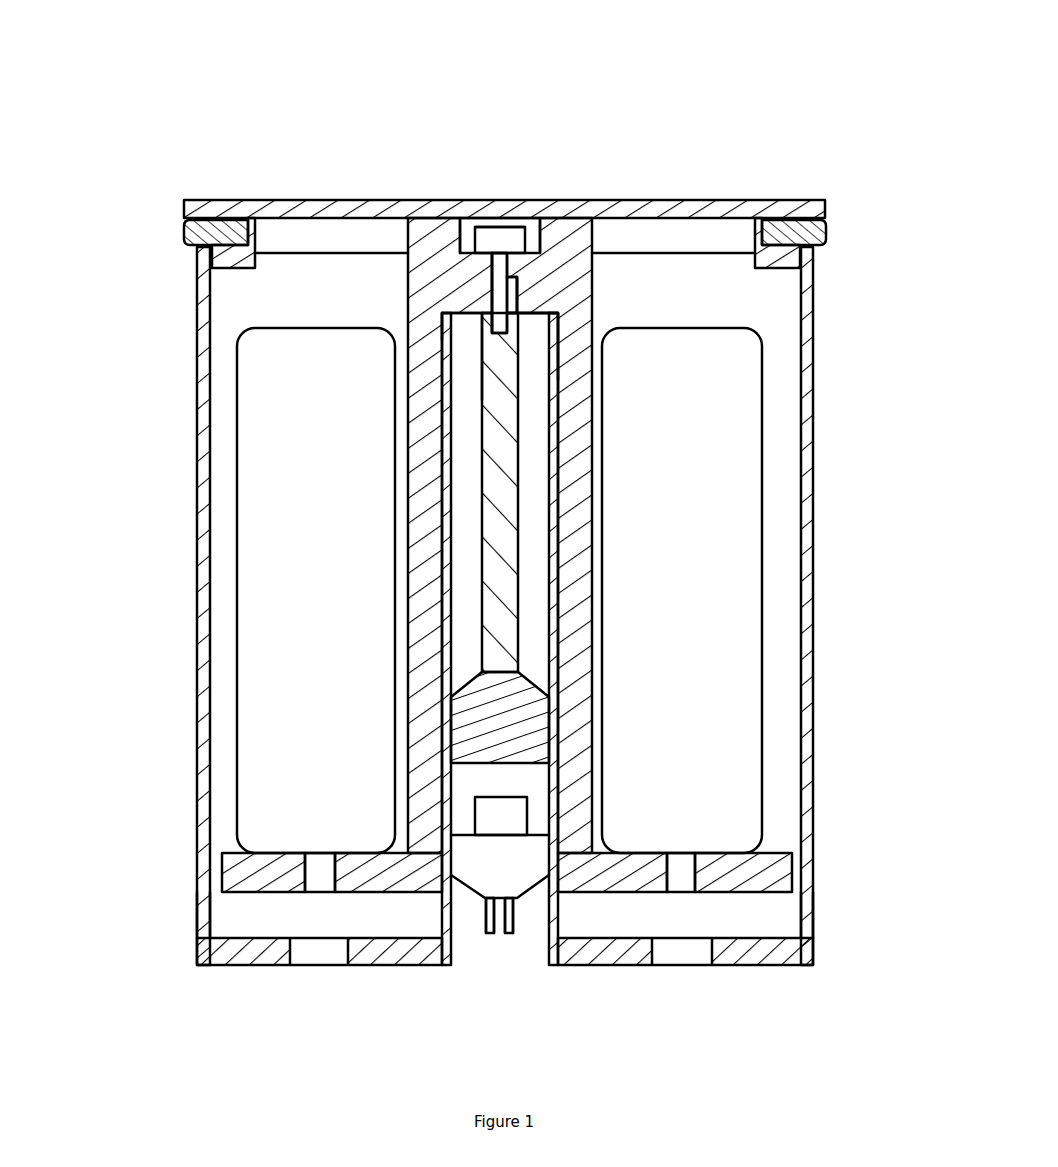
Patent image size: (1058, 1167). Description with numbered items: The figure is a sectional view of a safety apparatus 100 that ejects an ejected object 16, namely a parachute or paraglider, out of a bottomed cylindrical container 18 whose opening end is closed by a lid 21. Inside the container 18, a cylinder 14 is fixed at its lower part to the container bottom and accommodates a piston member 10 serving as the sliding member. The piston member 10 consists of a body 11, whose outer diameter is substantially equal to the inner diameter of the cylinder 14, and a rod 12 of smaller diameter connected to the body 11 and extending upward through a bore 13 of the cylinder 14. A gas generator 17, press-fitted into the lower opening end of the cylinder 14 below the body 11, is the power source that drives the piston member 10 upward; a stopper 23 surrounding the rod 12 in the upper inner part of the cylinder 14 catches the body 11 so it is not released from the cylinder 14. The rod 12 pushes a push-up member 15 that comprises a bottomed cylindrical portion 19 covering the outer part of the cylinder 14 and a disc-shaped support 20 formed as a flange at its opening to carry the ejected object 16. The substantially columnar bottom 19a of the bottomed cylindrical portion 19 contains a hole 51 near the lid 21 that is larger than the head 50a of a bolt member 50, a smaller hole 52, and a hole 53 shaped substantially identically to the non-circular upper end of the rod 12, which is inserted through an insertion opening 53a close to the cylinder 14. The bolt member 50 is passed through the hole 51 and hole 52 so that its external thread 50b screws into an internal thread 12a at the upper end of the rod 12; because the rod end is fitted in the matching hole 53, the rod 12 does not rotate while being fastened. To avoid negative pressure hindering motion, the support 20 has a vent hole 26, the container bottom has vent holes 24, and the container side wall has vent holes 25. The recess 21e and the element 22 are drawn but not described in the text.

The safety apparatus 100 is at (500, 542).
The piston member 10 is at (705, 538).
The body 11 is at (556, 687).
The rod 12 is at (518, 640).
The internal thread 12a is at (556, 357).
The bore 13 is at (483, 345).
The cylinder 14 is at (553, 583).
The push-up member 15 is at (468, 218).
The ejected object 16 is at (745, 432).
The gas generator 17 is at (498, 944).
The container 18 is at (810, 496).
The bottomed cylindrical portion 19 is at (567, 236).
The bottom 19a is at (486, 290).
The support 20 is at (378, 877).
The lid 21 is at (237, 206).
The recess 21e is at (322, 234).
The pin 22 is at (188, 232).
The stopper 23 is at (548, 300).
The vent hole 24 is at (312, 957).
The vent hole 25 is at (205, 892).
The vent hole 26 is at (318, 882).
The bolt member 50 is at (305, 227).
The head 50a is at (465, 238).
The external thread 50b is at (482, 278).
The hole 51 is at (537, 234).
The hole 52 is at (483, 229).
The hole 53 is at (484, 320).
The insertion opening 53a is at (540, 330).